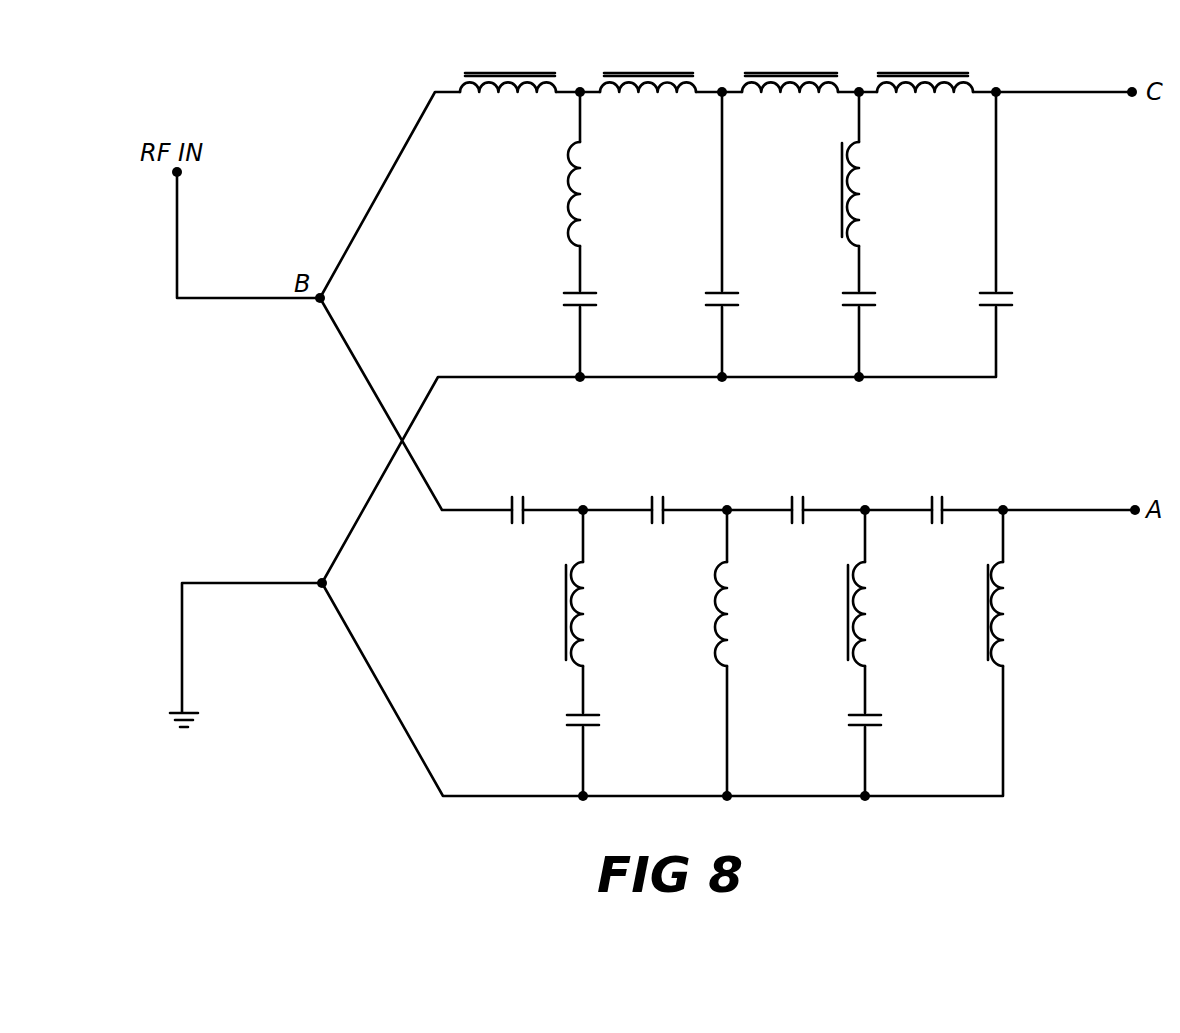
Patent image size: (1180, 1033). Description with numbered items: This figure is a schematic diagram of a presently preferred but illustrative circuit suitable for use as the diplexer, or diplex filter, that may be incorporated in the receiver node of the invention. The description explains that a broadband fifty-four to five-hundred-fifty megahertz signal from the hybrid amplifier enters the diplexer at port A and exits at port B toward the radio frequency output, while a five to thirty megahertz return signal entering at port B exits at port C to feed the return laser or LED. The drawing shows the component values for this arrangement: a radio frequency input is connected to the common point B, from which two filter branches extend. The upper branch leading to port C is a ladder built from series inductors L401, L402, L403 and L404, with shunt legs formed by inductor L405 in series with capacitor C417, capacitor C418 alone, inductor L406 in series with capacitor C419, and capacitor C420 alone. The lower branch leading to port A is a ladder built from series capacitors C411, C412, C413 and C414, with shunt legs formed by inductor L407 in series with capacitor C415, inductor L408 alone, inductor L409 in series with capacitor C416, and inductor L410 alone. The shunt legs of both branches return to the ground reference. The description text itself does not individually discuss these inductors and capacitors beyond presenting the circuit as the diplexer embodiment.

The series inductor L401 is at (491, 72).
The series inductor L402 is at (631, 72).
The series inductor L403 is at (770, 72).
The series inductor L404 is at (898, 72).
The shunt inductor L405 is at (569, 215).
The shunt inductor L406 is at (838, 216).
The shunt inductor L407 is at (564, 643).
The shunt inductor L408 is at (717, 643).
The shunt inductor L409 is at (846, 643).
The shunt inductor L410 is at (986, 643).
The series capacitor C411 is at (528, 500).
The series capacitor C412 is at (668, 500).
The series capacitor C413 is at (808, 500).
The series capacitor C414 is at (946, 500).
The shunt capacitor C415 is at (580, 713).
The shunt capacitor C416 is at (862, 713).
The shunt capacitor C417 is at (577, 291).
The shunt capacitor C418 is at (717, 291).
The shunt capacitor C419 is at (855, 291).
The shunt capacitor C420 is at (992, 291).